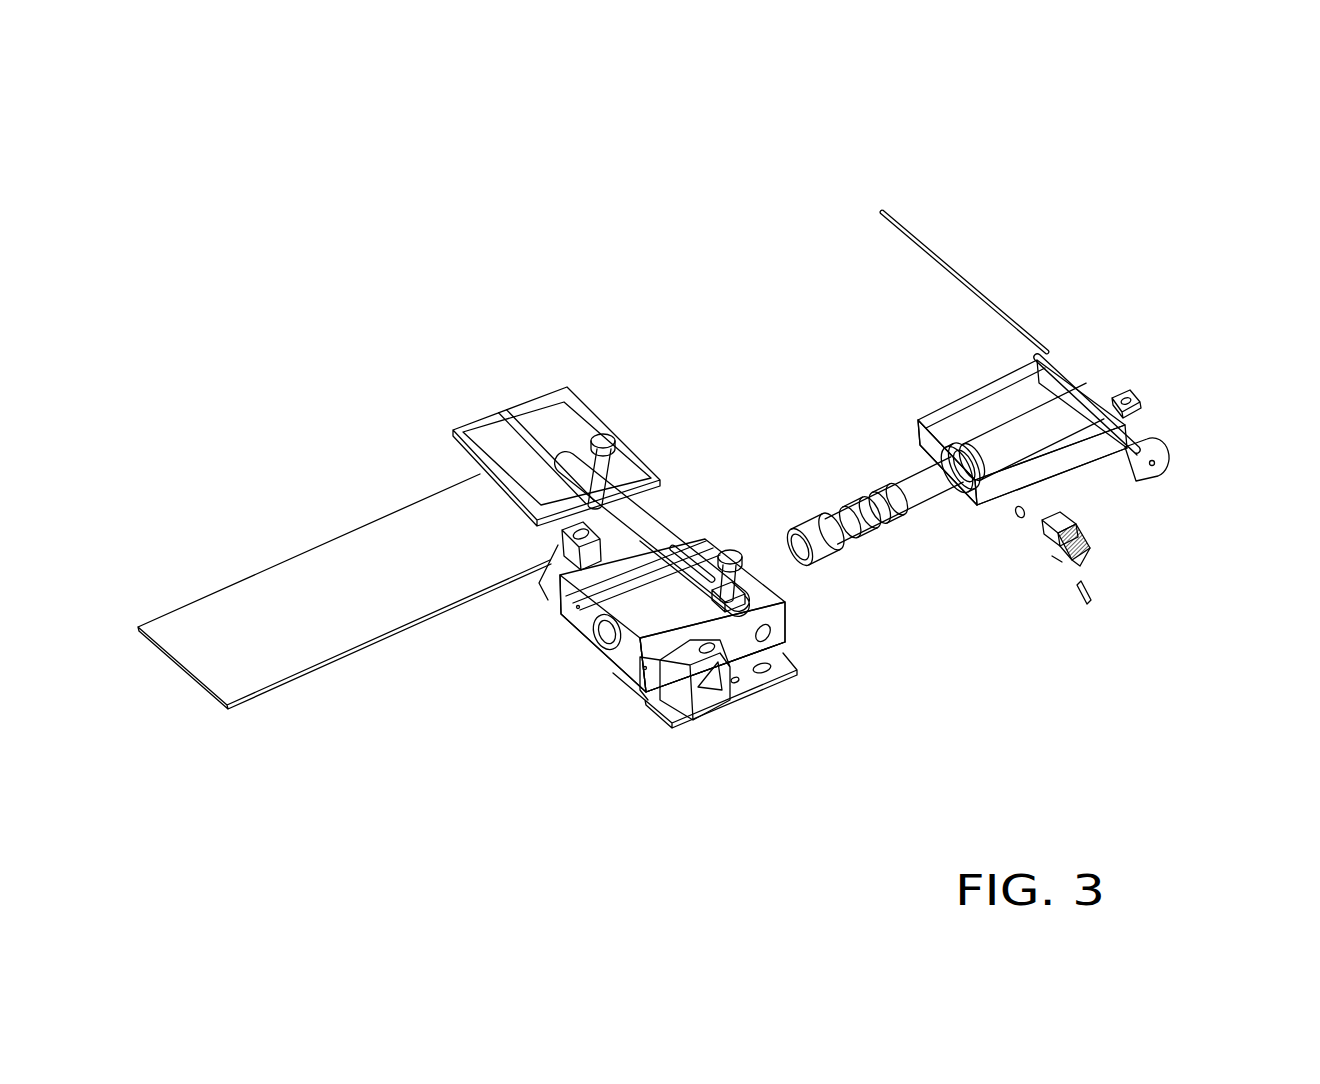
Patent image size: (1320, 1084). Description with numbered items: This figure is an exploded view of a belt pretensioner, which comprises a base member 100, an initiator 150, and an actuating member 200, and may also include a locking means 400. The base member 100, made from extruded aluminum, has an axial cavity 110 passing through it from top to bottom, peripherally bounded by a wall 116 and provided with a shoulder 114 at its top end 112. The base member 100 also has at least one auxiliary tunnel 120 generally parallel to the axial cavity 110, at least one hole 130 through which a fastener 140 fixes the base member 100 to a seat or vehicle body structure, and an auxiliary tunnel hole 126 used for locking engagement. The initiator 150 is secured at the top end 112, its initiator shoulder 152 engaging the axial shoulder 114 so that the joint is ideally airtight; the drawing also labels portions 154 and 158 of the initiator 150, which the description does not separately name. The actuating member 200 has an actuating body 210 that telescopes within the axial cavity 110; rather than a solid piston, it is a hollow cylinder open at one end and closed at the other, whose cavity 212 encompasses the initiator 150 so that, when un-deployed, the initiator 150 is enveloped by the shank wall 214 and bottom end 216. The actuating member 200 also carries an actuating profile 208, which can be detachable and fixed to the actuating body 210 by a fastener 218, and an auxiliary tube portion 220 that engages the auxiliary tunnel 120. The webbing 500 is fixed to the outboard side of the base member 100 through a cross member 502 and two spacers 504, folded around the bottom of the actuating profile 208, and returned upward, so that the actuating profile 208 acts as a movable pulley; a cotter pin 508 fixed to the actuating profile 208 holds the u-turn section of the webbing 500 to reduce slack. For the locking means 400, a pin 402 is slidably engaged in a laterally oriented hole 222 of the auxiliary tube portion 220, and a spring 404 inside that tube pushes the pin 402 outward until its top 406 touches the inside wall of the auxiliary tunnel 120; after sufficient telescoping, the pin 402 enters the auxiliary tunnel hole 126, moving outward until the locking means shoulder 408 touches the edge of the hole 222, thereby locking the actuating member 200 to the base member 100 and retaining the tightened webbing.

The base member 100 is at (642, 600).
The axial cavity 110 is at (617, 630).
The top end 112 is at (586, 705).
The shoulder 114 is at (600, 640).
The wall 116 is at (619, 743).
The auxiliary tunnel 120 is at (578, 607).
The auxiliary tunnel hole 126 is at (771, 622).
The hole 130 is at (770, 672).
The fastener 140 is at (603, 433).
The initiator 150 is at (855, 533).
The initiator shoulder 152 is at (812, 517).
The shaft body 154 is at (848, 517).
The collar 158 is at (923, 492).
The actuating member 200 is at (1076, 350).
The actuating profile 208 is at (1141, 433).
The actuating body 210 is at (1040, 438).
The cavity 212 is at (965, 485).
The shank wall 214 is at (1025, 440).
The bottom end 216 is at (1079, 410).
The fastener 218 is at (1130, 388).
The auxiliary tube portion 220 is at (957, 420).
The hole 222 is at (1022, 517).
The locking means 400 is at (1077, 577).
The pin 402 is at (1077, 552).
The spring 404 is at (1090, 537).
The top 406 is at (1075, 563).
The locking means shoulder 408 is at (1057, 560).
The webbing 500 is at (380, 560).
The cross member 502 is at (668, 540).
The spacer 504 is at (683, 683).
The cotter pin 508 is at (913, 233).